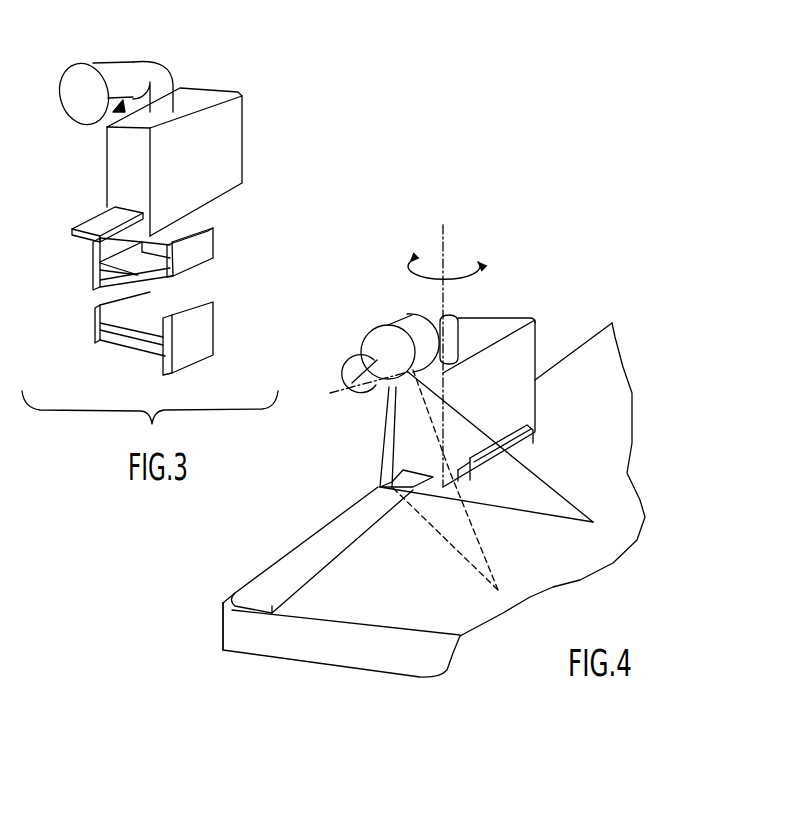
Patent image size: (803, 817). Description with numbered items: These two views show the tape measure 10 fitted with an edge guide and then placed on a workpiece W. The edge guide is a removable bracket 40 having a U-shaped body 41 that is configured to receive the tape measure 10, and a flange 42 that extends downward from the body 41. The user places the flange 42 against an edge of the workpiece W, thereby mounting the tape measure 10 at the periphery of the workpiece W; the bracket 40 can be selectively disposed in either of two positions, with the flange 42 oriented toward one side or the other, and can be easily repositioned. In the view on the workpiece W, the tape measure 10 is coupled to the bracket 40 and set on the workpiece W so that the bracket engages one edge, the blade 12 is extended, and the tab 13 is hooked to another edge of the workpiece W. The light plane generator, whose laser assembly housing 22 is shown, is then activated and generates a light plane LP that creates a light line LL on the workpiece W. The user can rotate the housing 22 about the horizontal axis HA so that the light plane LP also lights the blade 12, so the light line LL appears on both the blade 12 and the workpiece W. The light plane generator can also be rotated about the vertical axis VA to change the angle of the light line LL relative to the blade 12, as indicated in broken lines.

In FIG. 3, the tape measure 10 is at (227, 140).
In FIG. 4, the tape measure 10 is at (521, 384).
In FIG. 3, the blade 12 is at (97, 220).
In FIG. 4, the blade 12 is at (330, 525).
In FIG. 4, the tab 13 is at (250, 612).
In FIG. 3, the housing 22 is at (105, 75).
In FIG. 4, the housing 22 is at (390, 310).
In FIG. 3, the bracket 40 is at (80, 255).
In FIG. 3, the U-shaped body 41 is at (148, 240).
In FIG. 4, the U-shaped body 41 is at (484, 471).
In FIG. 3, the flange 42 is at (92, 280).
In FIG. 4, the vertical axis VA is at (448, 233).
In FIG. 4, the horizontal axis HA is at (336, 395).
In FIG. 4, the light plane LP is at (556, 497).
In FIG. 4, the light line LL is at (566, 515).
In FIG. 4, the workpiece W is at (345, 650).